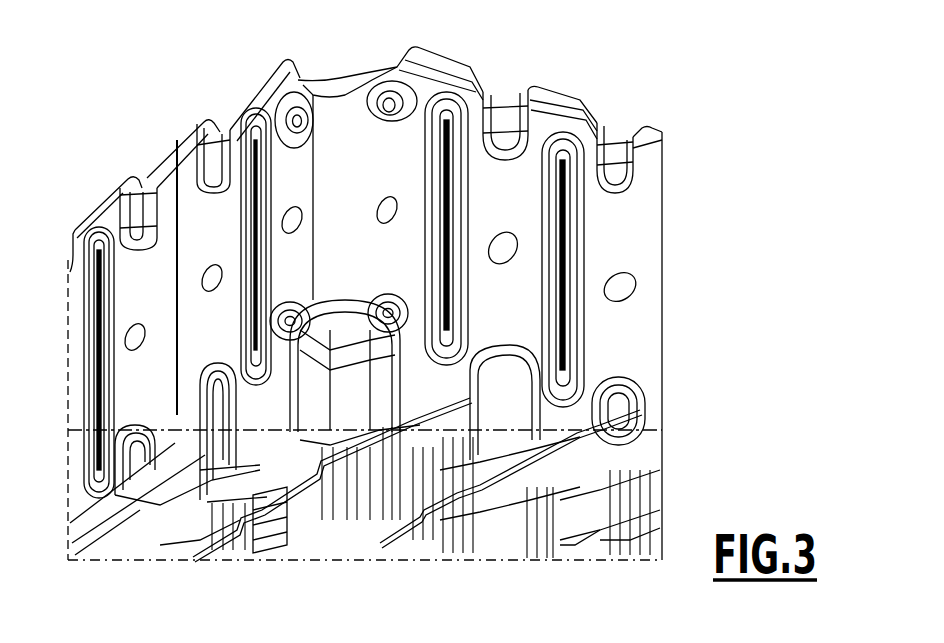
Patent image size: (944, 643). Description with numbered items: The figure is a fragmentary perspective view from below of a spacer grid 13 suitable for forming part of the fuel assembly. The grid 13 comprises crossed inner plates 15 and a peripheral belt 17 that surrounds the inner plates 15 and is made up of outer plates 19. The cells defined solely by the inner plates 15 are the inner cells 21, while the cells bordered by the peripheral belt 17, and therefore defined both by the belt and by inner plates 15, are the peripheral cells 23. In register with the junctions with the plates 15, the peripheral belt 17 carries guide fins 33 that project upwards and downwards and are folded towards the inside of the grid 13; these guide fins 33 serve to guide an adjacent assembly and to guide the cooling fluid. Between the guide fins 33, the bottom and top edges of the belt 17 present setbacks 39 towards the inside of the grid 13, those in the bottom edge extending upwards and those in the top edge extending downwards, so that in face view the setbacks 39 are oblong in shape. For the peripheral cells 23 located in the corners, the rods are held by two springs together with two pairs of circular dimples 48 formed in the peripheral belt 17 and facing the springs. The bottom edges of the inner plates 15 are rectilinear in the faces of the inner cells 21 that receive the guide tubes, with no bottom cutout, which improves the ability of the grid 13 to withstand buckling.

The grid 13 is at (642, 218).
The peripheral belt 17 is at (642, 262).
The outer plates 19 is at (638, 360).
The circular dimples 48 is at (388, 300).
The peripheral cells 23 is at (183, 537).
The guide fins 33 is at (540, 446).
The inner plates 15 is at (416, 553).
The setbacks 39 is at (494, 398).
The inner cells 21 is at (572, 540).